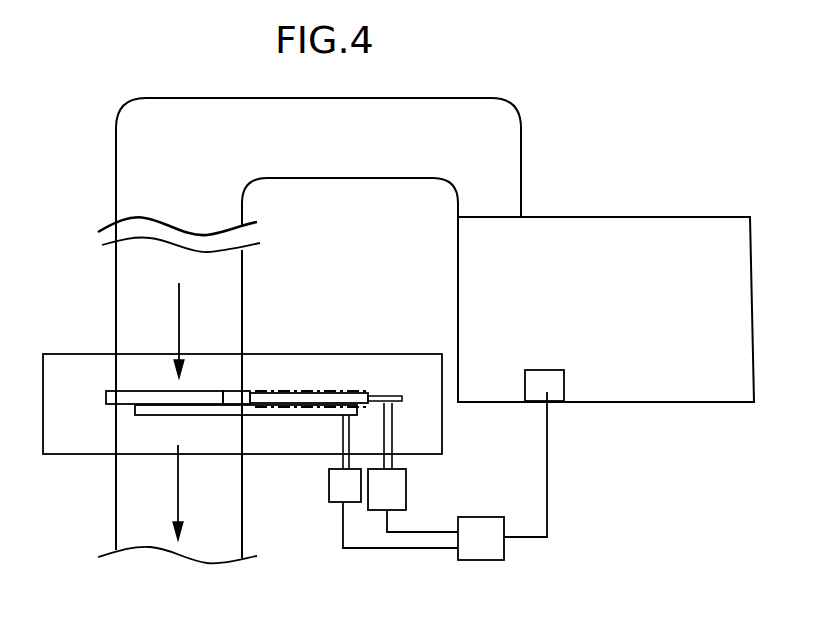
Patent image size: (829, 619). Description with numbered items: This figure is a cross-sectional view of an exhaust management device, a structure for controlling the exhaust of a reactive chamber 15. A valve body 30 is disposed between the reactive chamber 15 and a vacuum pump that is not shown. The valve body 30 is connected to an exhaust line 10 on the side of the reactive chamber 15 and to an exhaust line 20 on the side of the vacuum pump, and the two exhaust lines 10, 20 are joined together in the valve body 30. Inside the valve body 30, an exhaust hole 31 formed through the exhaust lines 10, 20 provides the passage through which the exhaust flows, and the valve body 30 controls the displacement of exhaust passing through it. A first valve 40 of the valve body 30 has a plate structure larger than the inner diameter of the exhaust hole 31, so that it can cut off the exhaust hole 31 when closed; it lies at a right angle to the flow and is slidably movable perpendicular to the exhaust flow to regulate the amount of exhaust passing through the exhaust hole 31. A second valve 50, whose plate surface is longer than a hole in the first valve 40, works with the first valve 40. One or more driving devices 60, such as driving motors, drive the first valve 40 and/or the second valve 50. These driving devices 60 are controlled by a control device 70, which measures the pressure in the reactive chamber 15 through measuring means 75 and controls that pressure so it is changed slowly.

The exhaust line 10 is at (243, 282).
The reactive chamber 15 is at (637, 217).
The exhaust line 20 is at (115, 527).
The valve body 30 is at (396, 367).
The exhaust hole 31 is at (190, 372).
The first valve 40 is at (152, 395).
The second valve 50 is at (180, 413).
The driving device 60 is at (329, 483).
The control device 70 is at (495, 522).
The measuring means 75 is at (557, 393).